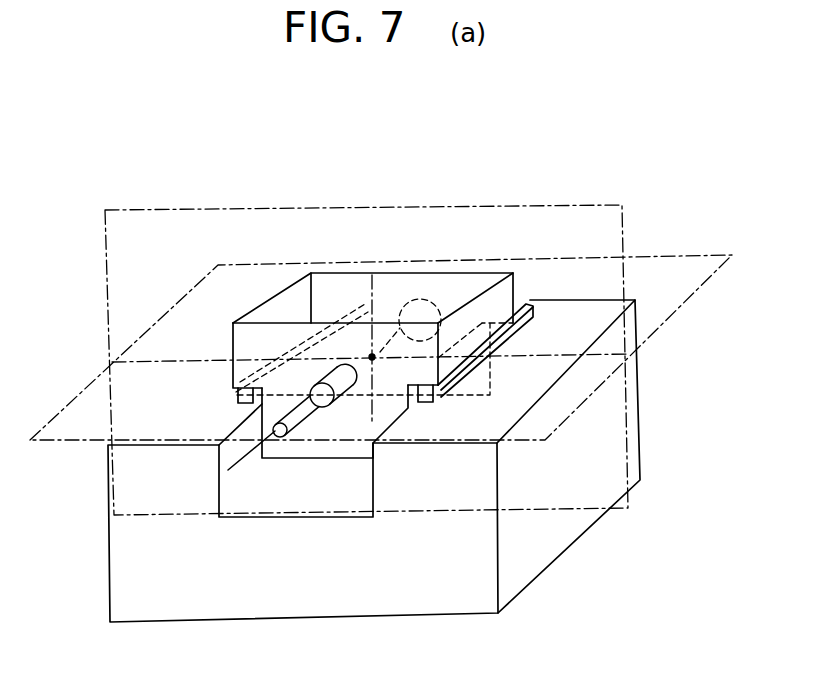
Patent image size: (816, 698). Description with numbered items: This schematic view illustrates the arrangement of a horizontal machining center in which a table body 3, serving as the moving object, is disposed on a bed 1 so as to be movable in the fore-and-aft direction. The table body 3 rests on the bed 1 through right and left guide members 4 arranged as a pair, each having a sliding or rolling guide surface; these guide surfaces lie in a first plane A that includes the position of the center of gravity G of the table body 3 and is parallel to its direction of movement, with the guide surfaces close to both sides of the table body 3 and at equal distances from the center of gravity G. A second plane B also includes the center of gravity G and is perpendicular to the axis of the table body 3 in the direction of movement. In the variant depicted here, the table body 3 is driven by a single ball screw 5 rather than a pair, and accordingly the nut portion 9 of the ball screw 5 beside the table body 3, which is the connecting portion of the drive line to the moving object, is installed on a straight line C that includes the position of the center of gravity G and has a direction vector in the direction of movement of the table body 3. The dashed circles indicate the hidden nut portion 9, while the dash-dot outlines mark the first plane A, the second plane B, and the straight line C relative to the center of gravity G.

The bed 1 is at (548, 530).
The table body 3 is at (380, 290).
The guide members 4 is at (238, 396).
The ball screw 5 is at (301, 425).
The nut portion 9 is at (320, 378).
The first plane A is at (652, 333).
The second plane B is at (626, 222).
The straight line C is at (240, 462).
The center of gravity G is at (372, 357).